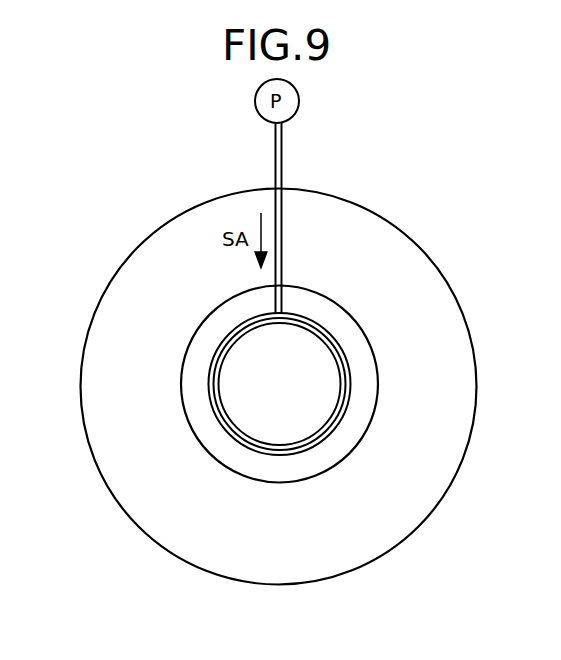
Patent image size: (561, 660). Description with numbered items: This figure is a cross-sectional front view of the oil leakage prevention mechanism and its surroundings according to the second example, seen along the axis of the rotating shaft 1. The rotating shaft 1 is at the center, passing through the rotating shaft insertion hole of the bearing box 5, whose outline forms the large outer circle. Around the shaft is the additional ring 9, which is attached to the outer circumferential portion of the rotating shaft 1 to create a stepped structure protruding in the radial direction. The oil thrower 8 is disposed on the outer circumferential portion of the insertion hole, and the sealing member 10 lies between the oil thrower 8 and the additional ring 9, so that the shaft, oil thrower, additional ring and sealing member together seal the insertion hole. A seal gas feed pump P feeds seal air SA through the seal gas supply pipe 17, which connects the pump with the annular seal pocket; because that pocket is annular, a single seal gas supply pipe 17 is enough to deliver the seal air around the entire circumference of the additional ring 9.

The rotating shaft 1 is at (287, 423).
The bearing box 5 is at (412, 281).
The oil thrower 8 is at (365, 389).
The additional ring 9 is at (217, 352).
The sealing member 10 is at (216, 412).
The seal gas supply pipe 17 is at (281, 237).